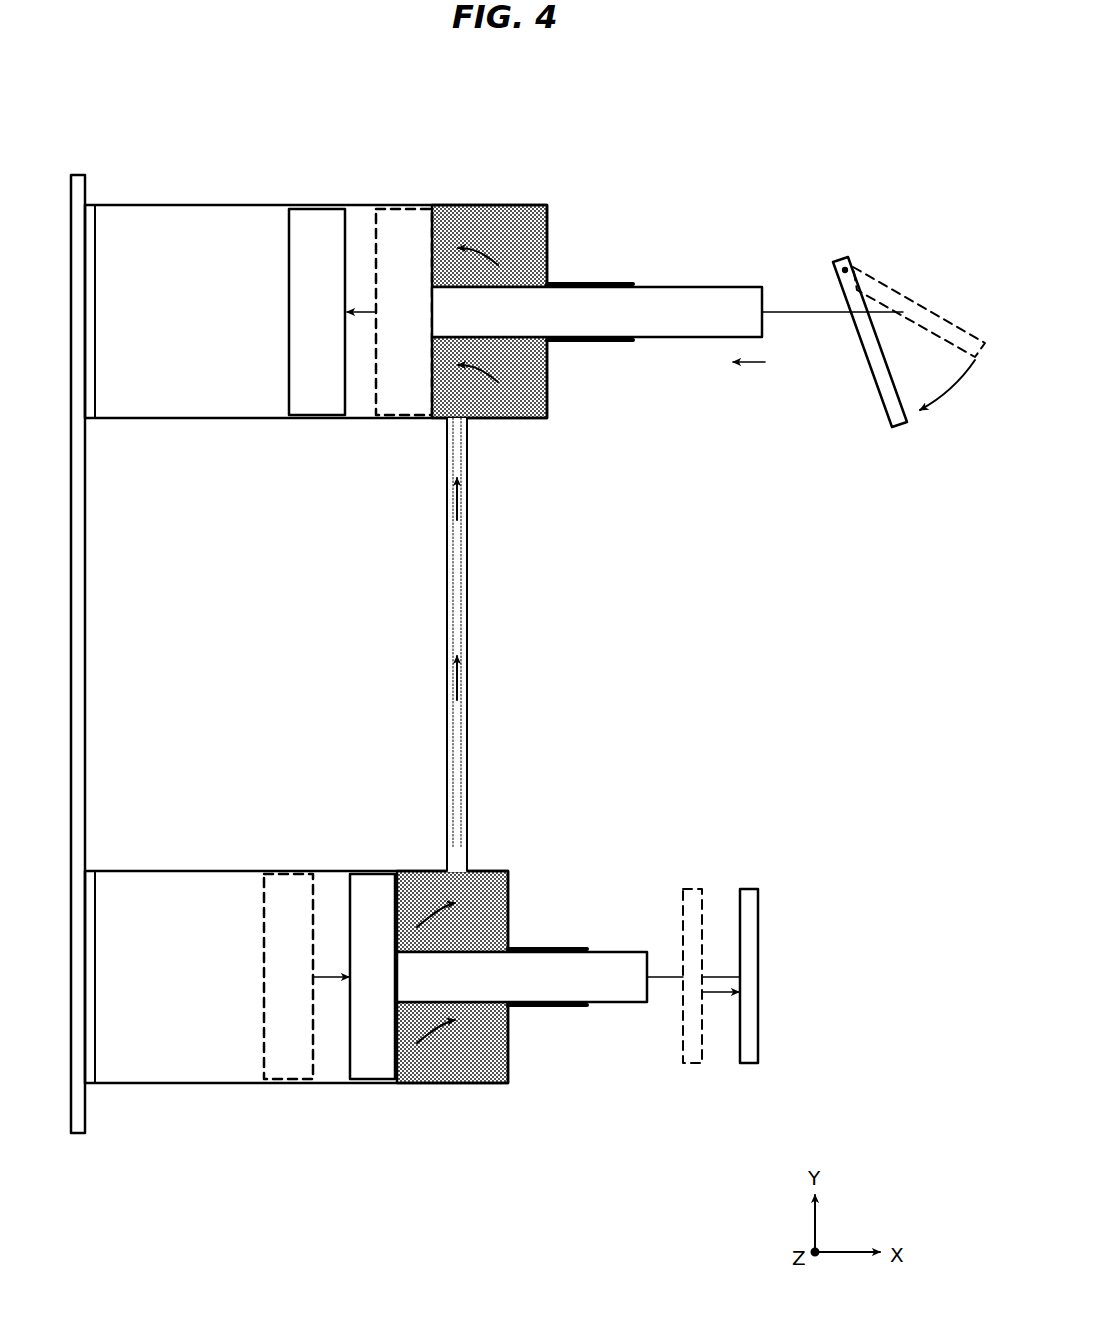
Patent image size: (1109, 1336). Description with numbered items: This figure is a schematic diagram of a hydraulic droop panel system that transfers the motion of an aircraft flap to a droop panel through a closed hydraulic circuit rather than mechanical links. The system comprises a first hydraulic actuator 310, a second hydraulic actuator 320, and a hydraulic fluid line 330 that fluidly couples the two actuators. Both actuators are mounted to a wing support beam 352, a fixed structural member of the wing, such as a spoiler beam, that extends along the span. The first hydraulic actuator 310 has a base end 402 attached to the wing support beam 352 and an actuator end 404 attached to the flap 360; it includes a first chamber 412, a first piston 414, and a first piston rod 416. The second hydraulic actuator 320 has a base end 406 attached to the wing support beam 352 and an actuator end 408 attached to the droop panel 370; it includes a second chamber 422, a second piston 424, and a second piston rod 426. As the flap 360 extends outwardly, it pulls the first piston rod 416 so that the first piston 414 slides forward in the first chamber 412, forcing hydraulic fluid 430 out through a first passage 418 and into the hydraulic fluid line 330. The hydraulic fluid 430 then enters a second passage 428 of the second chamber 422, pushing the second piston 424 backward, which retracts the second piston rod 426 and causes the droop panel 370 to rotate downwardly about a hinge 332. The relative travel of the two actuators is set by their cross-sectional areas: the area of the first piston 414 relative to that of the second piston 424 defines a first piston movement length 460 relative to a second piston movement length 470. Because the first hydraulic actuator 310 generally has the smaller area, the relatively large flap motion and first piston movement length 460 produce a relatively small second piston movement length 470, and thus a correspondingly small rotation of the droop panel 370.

The first hydraulic actuator 310 is at (555, 1143).
The second hydraulic actuator 320 is at (258, 452).
The hydraulic fluid line 330 is at (443, 715).
The hinge 332 is at (848, 268).
The wing support beam 352 is at (78, 175).
The flap 360 is at (752, 920).
The droop panel 370 is at (918, 302).
The base end 402 is at (90, 871).
The actuator end 404 is at (650, 965).
The base end 406 is at (90, 205).
The actuator end 408 is at (764, 298).
The first chamber 412 is at (203, 871).
The first piston 414 is at (330, 976).
The first piston rod 416 is at (603, 960).
The first passage 418 is at (460, 866).
The second chamber 422 is at (214, 218).
The second piston 424 is at (360, 312).
The second piston rod 426 is at (662, 300).
The second passage 428 is at (455, 420).
The hydraulic fluid 430 is at (535, 247).
The first piston movement length 460 is at (327, 977).
The second piston movement length 470 is at (375, 312).